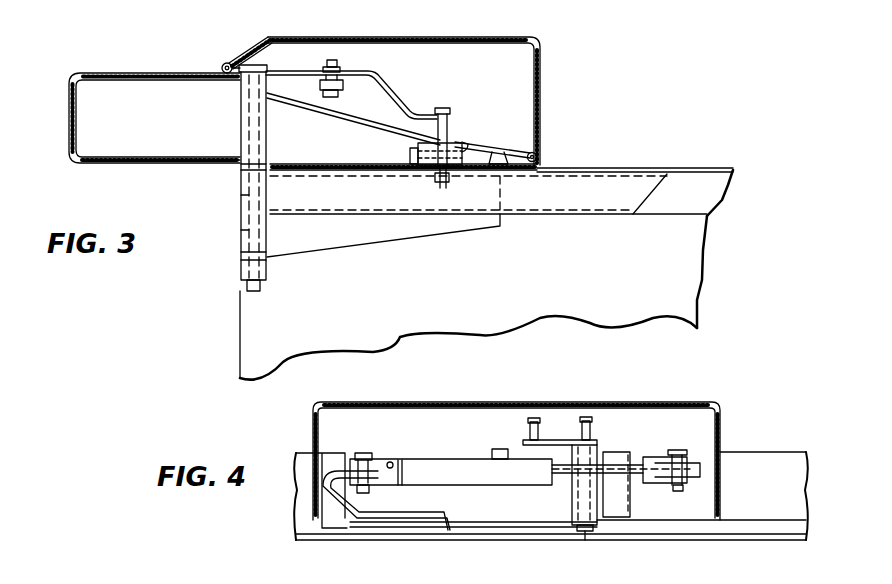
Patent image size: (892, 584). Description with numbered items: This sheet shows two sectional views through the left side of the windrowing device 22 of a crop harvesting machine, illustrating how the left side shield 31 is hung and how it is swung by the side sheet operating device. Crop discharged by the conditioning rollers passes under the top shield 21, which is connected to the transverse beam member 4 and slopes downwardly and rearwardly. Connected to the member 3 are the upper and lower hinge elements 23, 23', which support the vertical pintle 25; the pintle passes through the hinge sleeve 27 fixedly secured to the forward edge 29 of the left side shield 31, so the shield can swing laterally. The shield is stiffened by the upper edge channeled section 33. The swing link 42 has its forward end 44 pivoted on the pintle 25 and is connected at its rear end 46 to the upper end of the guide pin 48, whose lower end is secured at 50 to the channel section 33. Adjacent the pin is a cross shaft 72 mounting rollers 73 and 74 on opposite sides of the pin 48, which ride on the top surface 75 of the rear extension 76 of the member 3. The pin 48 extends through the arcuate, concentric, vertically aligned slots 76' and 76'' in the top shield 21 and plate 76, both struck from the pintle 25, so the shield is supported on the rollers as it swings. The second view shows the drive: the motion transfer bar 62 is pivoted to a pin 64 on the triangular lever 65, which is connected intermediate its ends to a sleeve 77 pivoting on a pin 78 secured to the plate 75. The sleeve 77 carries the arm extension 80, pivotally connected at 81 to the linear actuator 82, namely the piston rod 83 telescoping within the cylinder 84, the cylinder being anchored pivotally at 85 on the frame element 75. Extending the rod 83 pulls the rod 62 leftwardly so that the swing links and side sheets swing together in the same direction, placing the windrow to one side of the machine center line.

In FIG. 3, the member 3 is at (125, 72).
In FIG. 3, the transverse beam member 4 is at (93, 163).
In FIG. 3, the top shield 21 is at (292, 97).
In FIG. 3, the windrowing device 22 is at (700, 285).
In FIG. 3, the upper hinge element 23 is at (277, 172).
In FIG. 3, the lower hinge element 23' is at (230, 271).
In FIG. 3, the vertical pintle 25 is at (246, 64).
In FIG. 3, the hinge sleeve 27 is at (248, 235).
In FIG. 3, the forward edge 29 is at (240, 318).
In FIG. 3, the left side shield 31 is at (403, 316).
In FIG. 3, the upper edge channeled section 33 is at (685, 185).
In FIG. 3, the swing link 42 is at (373, 71).
In FIG. 3, the forward end 44 is at (271, 65).
In FIG. 3, the rear end connection 46 is at (447, 117).
In FIG. 3, the guide pin 48 is at (443, 110).
In FIG. 3, the lower end securement 50 is at (447, 185).
In FIG. 3, the motion transfer bar 62 is at (340, 88).
In FIG. 3, the pin 64 is at (333, 60).
In FIG. 4, the pin 64 is at (532, 420).
In FIG. 4, the lever 65 is at (556, 436).
In FIG. 3, the cross shaft 72 is at (415, 152).
In FIG. 3, the roller 73 is at (473, 148).
In FIG. 3, the roller 74 is at (412, 157).
In FIG. 3, the top surface 75 is at (290, 163).
In FIG. 4, the top surface 75 is at (508, 527).
In FIG. 3, the rear extension 76 is at (338, 195).
In FIG. 3, the arcuate slot 76' is at (487, 131).
In FIG. 3, the arcuate slot 76'' is at (415, 188).
In FIG. 4, the sleeve 77 is at (597, 452).
In FIG. 4, the pin 78 is at (587, 538).
In FIG. 4, the arm extension 80 is at (698, 468).
In FIG. 4, the pivotal connection 81 is at (685, 430).
In FIG. 4, the linear actuator 82 is at (452, 476).
In FIG. 4, the piston rod 83 is at (557, 485).
In FIG. 4, the cylinder 84 is at (432, 458).
In FIG. 4, the pivotal anchor 85 is at (362, 452).